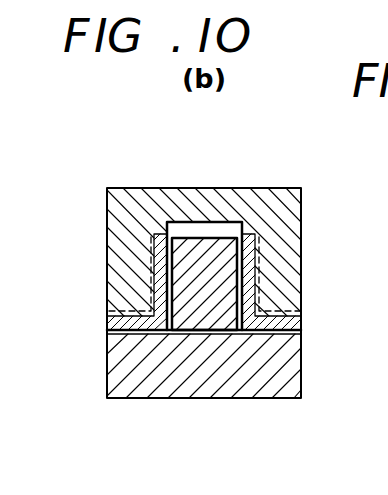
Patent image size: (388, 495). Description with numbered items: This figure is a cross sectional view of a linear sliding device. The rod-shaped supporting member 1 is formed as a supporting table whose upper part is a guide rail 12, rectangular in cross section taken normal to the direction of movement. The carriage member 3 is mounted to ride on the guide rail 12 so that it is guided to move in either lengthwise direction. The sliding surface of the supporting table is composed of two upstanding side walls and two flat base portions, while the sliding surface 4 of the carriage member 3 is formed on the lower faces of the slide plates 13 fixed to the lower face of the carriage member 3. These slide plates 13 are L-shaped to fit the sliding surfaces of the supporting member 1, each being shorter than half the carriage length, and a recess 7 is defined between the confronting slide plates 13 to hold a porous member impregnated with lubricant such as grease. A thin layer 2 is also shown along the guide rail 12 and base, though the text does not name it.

The supporting member 1 is at (276, 383).
The thin insulating layer 2 is at (155, 263).
The carriage member 3 is at (227, 193).
The sliding surface 4 is at (172, 303).
The recess 7 is at (148, 245).
The guide rail 12 is at (196, 250).
The slide plates 13 is at (275, 312).